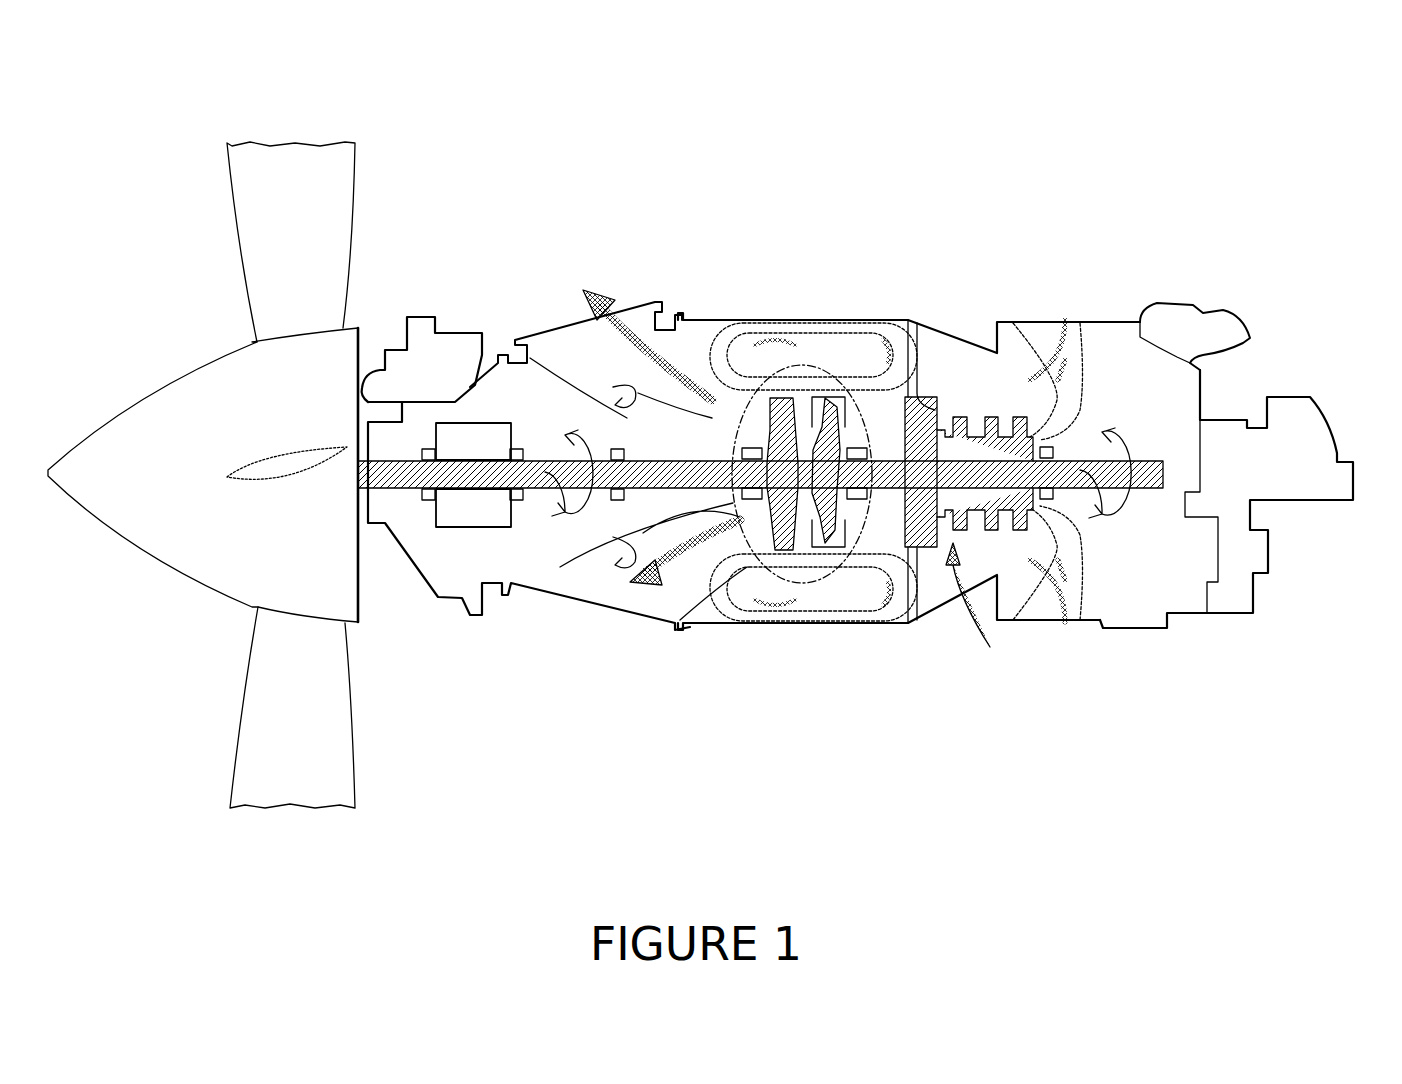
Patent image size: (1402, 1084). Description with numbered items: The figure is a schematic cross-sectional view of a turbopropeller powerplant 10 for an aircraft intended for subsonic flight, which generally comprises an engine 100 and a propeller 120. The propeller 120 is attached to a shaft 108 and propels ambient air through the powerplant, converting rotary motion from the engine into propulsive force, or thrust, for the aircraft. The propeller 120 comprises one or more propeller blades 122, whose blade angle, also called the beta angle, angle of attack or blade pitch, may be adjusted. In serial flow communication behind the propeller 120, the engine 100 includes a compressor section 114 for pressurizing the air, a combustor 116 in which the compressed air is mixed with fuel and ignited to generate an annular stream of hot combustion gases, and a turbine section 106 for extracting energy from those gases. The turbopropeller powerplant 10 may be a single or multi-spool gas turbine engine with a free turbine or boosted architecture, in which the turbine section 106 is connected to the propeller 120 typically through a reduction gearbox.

The turbopropeller powerplant 10 is at (983, 86).
The engine 100 is at (1280, 283).
The turbine section 106 is at (640, 530).
The shaft 108 is at (386, 492).
The compressor section 114 is at (958, 590).
The combustor 116 is at (828, 353).
The propeller 120 is at (193, 337).
The propeller blades 122 is at (328, 193).